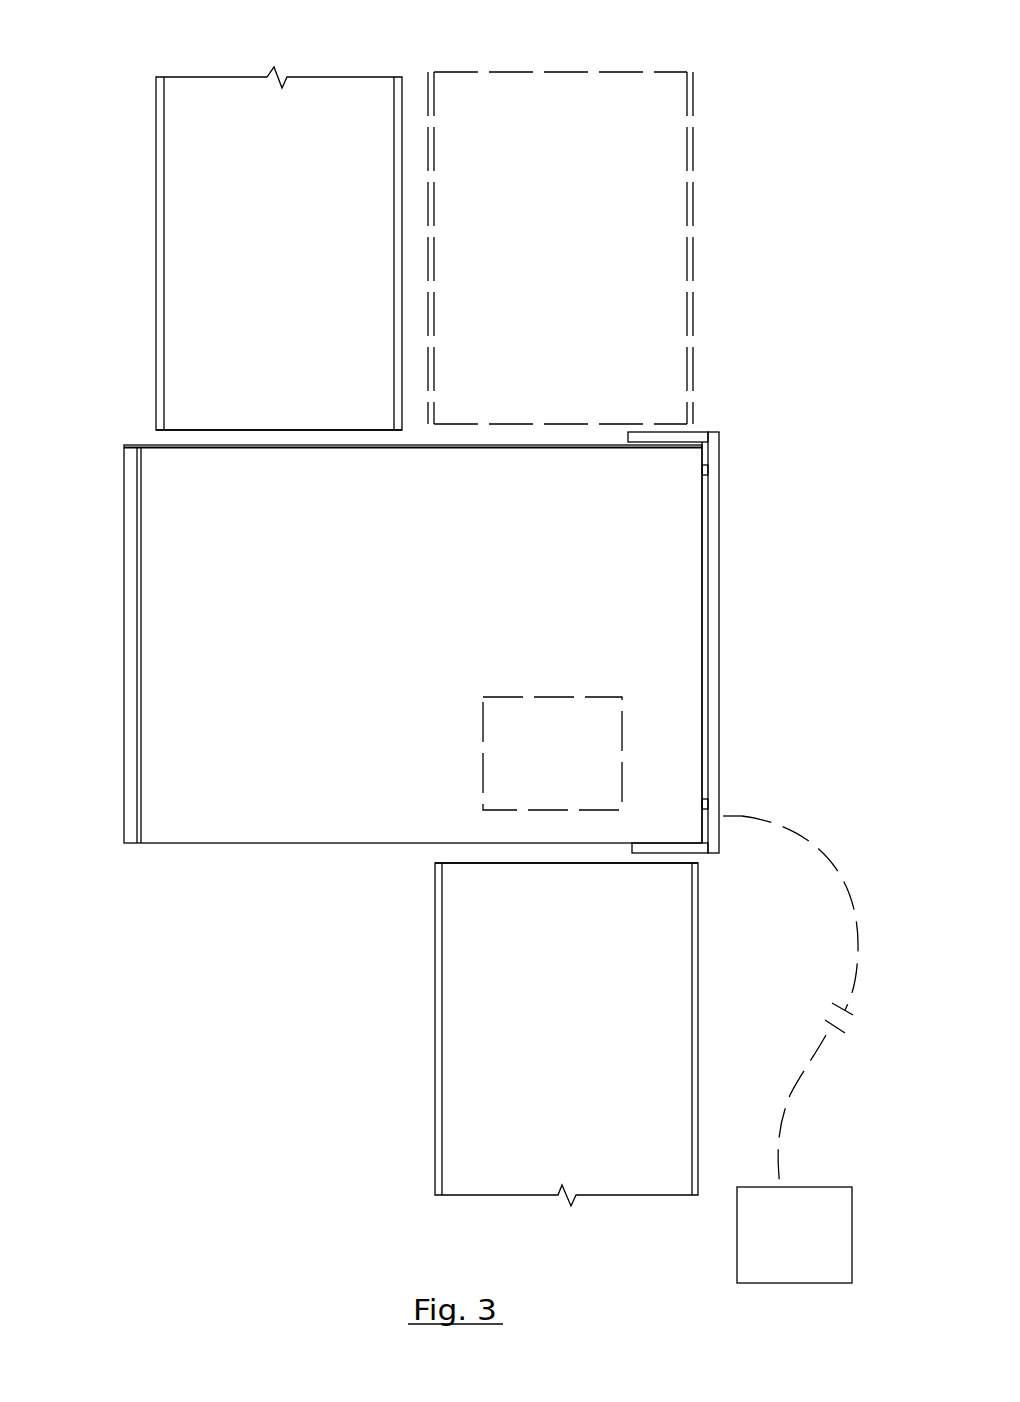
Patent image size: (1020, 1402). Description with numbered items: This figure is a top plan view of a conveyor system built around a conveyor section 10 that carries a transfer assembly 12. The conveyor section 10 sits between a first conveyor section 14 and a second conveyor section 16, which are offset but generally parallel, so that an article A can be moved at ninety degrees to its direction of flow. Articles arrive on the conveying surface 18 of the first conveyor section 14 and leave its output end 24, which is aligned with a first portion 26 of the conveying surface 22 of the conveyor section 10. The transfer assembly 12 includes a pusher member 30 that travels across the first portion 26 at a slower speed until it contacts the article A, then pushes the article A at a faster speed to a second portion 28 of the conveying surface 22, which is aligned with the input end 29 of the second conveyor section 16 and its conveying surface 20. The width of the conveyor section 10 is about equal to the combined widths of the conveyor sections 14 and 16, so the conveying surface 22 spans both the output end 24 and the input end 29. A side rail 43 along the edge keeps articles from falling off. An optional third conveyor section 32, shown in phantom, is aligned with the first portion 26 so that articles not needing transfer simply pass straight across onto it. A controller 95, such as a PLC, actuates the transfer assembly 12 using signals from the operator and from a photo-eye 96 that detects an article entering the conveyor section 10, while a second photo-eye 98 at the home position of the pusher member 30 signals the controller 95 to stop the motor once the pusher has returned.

The conveyor section 10 is at (433, 633).
The transfer assembly 12 is at (725, 633).
The first conveyor section 14 is at (501, 1034).
The second conveyor section 16 is at (229, 261).
The conveying surface 18 is at (620, 988).
The conveying surface 20 is at (284, 130).
The conveying surface 22 is at (430, 644).
The output end 24 is at (645, 894).
The first portion 26 is at (628, 638).
The second portion 28 is at (193, 515).
The input end 29 is at (293, 417).
The pusher member 30 is at (712, 515).
The third conveyor section 32 is at (687, 152).
The side rail 43 is at (124, 692).
The controller 95 is at (727, 1258).
The photo-eye 96 is at (677, 790).
The second photo-eye 98 is at (705, 472).
The article A is at (572, 738).